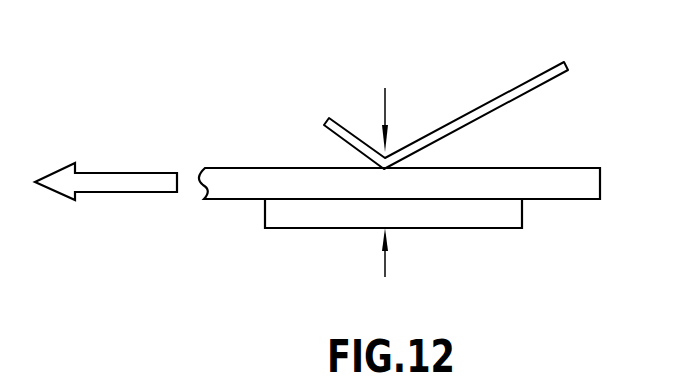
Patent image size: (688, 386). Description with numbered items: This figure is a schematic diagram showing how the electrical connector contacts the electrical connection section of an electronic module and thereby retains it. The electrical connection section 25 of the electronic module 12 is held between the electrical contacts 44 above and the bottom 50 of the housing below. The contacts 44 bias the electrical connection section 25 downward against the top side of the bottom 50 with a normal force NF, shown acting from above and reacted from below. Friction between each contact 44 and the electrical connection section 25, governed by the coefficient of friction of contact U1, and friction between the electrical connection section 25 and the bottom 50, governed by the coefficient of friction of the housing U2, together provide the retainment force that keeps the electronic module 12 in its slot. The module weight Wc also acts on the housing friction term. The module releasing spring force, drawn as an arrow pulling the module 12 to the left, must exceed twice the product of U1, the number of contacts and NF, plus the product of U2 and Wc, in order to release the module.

The electronic module 12 is at (235, 199).
The electrical connection section 25 is at (568, 168).
The electrical contacts 44 is at (488, 80).
The bottom of the housing 50 is at (478, 236).
The normal force NF is at (387, 184).
The coefficient of friction of contact U1 is at (332, 152).
The coefficient of friction of the housing or frame U2 is at (549, 209).
The module weight Wc is at (635, 187).